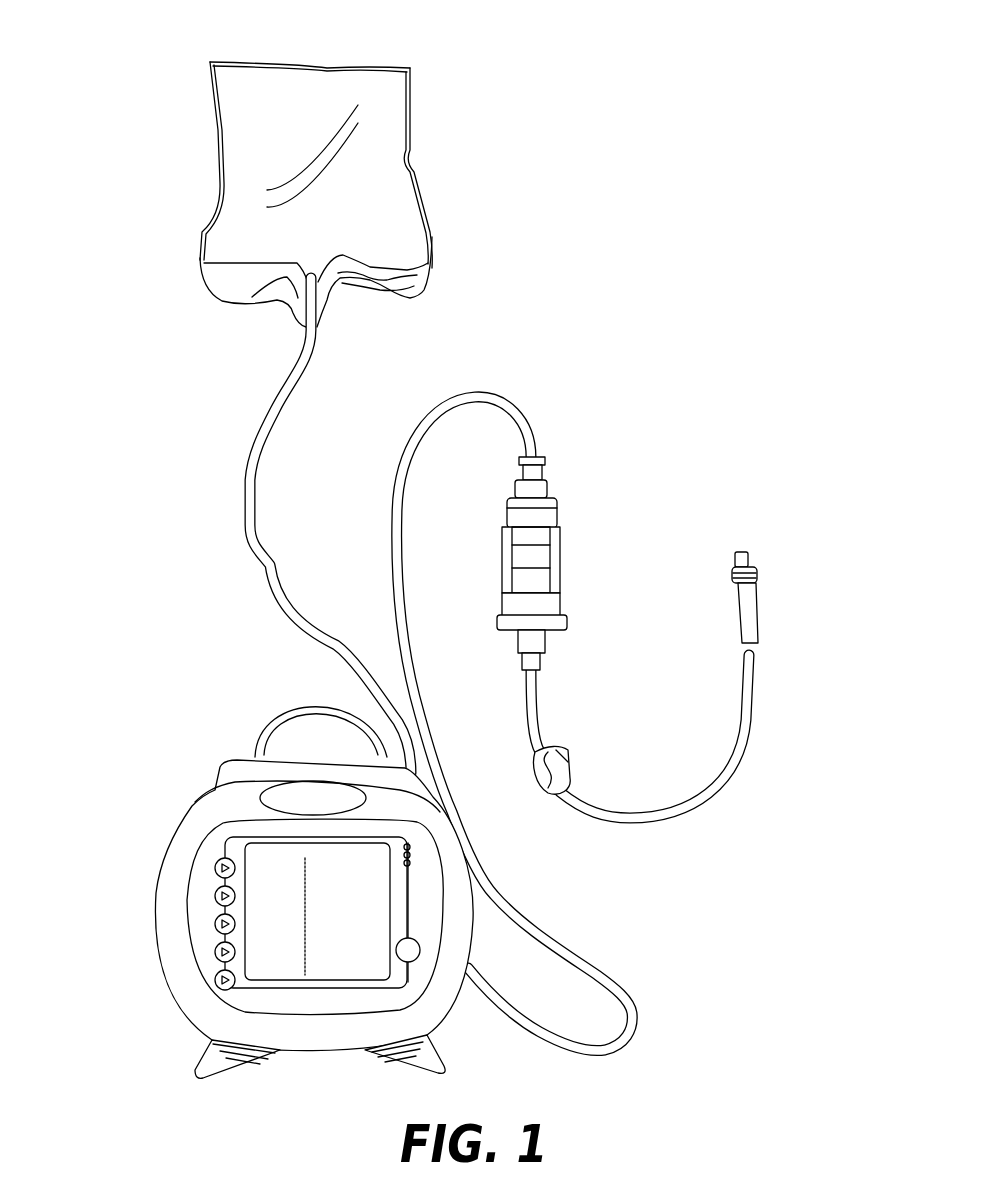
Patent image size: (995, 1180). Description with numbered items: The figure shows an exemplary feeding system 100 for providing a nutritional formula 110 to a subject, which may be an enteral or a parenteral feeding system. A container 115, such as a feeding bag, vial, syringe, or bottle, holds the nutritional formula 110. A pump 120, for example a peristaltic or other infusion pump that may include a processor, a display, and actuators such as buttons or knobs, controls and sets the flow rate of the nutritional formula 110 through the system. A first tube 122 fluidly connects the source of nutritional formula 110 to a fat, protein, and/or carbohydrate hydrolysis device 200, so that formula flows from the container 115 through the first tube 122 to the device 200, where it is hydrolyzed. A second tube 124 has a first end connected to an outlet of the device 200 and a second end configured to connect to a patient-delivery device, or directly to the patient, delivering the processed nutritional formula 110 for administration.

The feeding system 100 is at (160, 110).
The nutritional formula 110 is at (333, 93).
The container 115 is at (403, 127).
The pump 120 is at (170, 912).
The first tube 122 is at (245, 543).
The second tube 124 is at (723, 777).
The hydrolysis device 200 is at (568, 475).